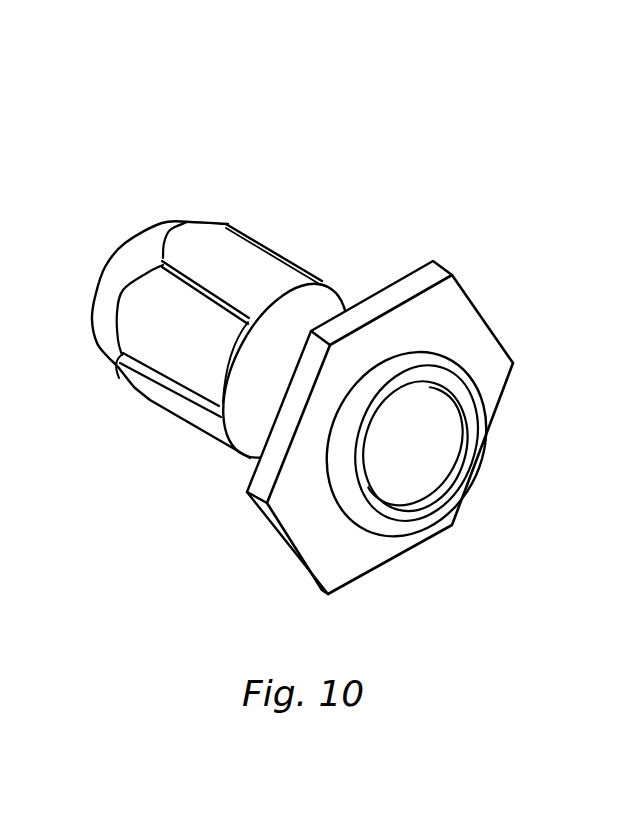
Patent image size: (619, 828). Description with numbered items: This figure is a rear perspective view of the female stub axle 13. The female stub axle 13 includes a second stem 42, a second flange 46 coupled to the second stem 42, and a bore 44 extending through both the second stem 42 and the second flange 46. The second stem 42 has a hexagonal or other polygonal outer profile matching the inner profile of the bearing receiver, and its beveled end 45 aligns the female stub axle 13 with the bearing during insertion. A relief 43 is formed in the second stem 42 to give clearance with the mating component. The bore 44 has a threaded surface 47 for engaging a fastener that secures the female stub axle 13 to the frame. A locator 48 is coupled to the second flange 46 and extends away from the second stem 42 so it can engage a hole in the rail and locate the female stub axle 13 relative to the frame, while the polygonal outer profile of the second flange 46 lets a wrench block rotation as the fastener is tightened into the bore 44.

The female stub axle 13 is at (510, 109).
The second stem 42 is at (264, 241).
The relief 43 is at (335, 298).
The bore 44 is at (402, 454).
The beveled end 45 is at (167, 225).
The second flange 46 is at (440, 257).
The threaded surface 47 is at (452, 425).
The locator 48 is at (445, 360).